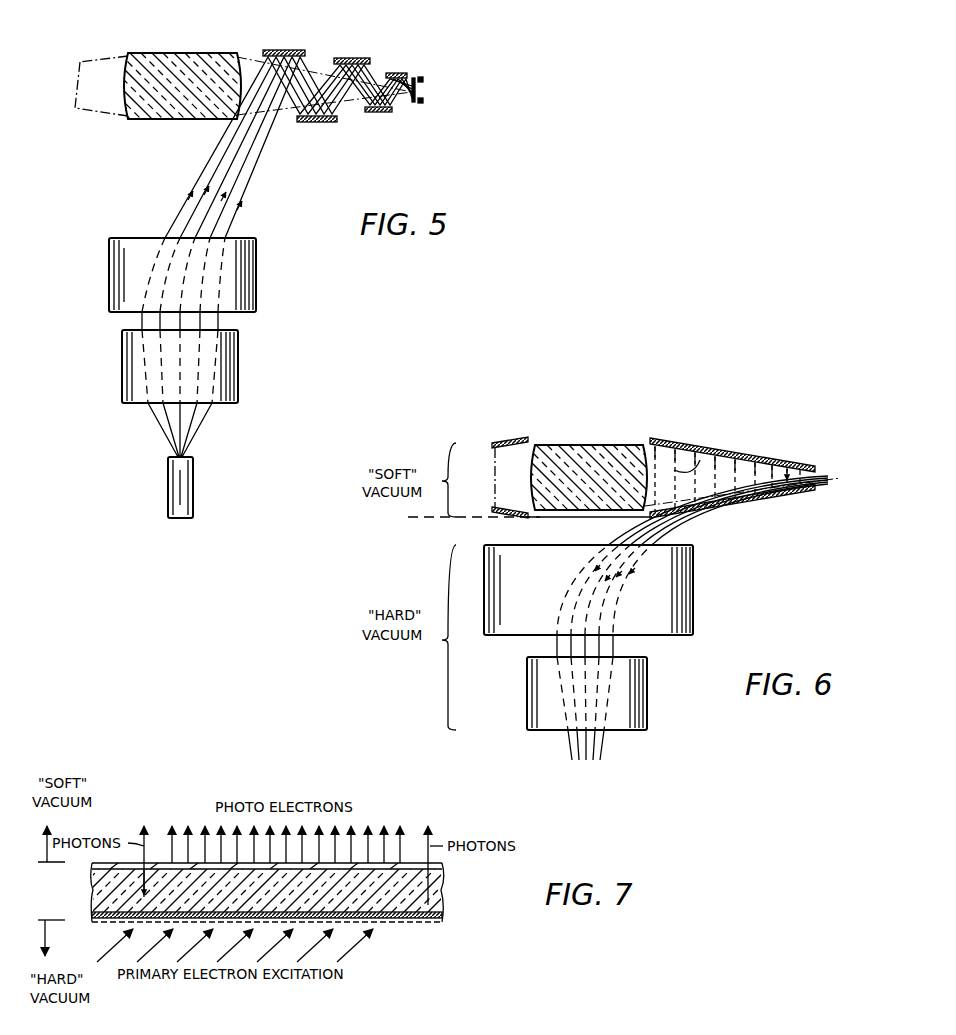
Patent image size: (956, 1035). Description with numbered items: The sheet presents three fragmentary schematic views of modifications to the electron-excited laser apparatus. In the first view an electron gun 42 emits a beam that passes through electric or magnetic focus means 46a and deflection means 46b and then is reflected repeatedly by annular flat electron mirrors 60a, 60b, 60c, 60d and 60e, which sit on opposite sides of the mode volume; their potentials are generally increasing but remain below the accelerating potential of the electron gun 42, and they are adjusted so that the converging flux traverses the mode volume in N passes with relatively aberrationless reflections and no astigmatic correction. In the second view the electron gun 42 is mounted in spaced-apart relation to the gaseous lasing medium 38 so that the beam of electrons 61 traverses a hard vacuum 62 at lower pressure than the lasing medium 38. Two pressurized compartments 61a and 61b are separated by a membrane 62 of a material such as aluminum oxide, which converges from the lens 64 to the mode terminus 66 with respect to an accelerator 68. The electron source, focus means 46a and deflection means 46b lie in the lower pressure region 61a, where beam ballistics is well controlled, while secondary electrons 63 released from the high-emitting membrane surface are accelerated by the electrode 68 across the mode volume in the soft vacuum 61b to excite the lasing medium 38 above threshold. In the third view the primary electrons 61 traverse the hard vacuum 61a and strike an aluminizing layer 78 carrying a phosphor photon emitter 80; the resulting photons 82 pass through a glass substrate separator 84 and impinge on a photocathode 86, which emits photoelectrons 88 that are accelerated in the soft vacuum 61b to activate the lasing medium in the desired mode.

In FIG. 5, the annular flat electron mirror 60a is at (280, 50).
In FIG. 5, the annular flat electron mirror 60b is at (316, 122).
In FIG. 5, the annular flat electron mirror 60c is at (357, 58).
In FIG. 5, the annular flat electron mirror 60d is at (380, 112).
In FIG. 5, the annular flat electron mirror 60e is at (403, 73).
In FIG. 5, the focus means 46a is at (240, 358).
In FIG. 6, the focus means 46a is at (648, 690).
In FIG. 5, the deflection means 46b is at (257, 270).
In FIG. 6, the deflection means 46b is at (694, 611).
In FIG. 5, the electron gun 42 is at (194, 473).
In FIG. 6, the gaseous lasing medium 38 is at (526, 458).
In FIG. 6, the lens 64 is at (588, 445).
In FIG. 6, the membrane 62 is at (797, 491).
In FIG. 6, the secondary electrons 63 is at (684, 456).
In FIG. 6, the accelerator electrode 68 is at (715, 462).
In FIG. 6, the mode terminus 66 is at (820, 478).
In FIG. 6, the electron beam 61 is at (686, 528).
In FIG. 7, the electron beam 61 is at (283, 946).
In FIG. 6, the lower pressure compartment 61a is at (770, 542).
In FIG. 7, the lower pressure compartment 61a is at (215, 1006).
In FIG. 6, the higher pressure compartment 61b is at (752, 476).
In FIG. 7, the higher pressure compartment 61b is at (192, 807).
In FIG. 7, the aluminizing layer 78 is at (402, 924).
In FIG. 7, the phosphor photon emitter 80 is at (106, 906).
In FIG. 7, the photons 82 is at (440, 891).
In FIG. 7, the glass substrate separator 84 is at (414, 910).
In FIG. 7, the photocathode 86 is at (440, 866).
In FIG. 7, the photoelectrons 88 is at (383, 838).